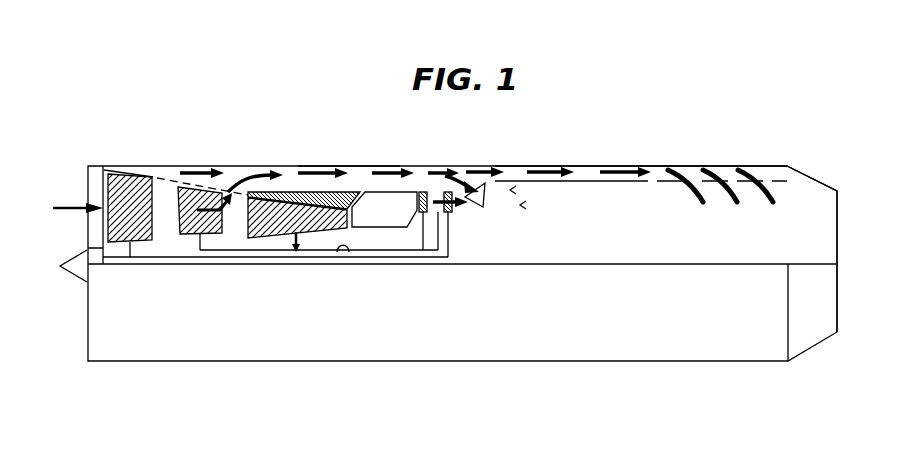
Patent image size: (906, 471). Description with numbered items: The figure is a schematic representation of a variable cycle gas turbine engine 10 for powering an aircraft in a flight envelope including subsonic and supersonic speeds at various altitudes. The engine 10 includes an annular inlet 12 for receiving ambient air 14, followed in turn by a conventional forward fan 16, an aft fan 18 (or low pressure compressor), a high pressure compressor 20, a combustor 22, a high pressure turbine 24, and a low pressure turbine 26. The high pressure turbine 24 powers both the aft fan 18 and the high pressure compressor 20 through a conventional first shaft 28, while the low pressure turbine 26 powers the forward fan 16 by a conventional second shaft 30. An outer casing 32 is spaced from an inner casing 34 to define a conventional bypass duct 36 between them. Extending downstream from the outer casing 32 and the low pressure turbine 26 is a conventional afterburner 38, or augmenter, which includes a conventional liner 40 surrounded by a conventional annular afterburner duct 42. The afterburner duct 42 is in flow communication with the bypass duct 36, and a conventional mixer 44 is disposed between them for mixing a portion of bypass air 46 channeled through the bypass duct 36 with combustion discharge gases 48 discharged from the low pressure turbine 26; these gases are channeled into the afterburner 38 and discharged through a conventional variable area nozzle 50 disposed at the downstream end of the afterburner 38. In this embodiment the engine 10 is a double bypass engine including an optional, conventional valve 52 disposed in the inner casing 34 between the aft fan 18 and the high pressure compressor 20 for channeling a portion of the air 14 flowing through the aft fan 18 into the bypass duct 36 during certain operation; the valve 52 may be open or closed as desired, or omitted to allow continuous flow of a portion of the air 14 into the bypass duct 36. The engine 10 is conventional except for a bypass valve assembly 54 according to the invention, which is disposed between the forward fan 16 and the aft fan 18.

The variable cycle gas turbine engine 10 is at (189, 372).
The annular inlet 12 is at (88, 178).
The ambient air 14 is at (62, 204).
The forward fan 16 is at (122, 186).
The aft fan 18 is at (183, 236).
The high pressure compressor 20 is at (275, 234).
The combustor 22 is at (396, 208).
The high pressure turbine 24 is at (428, 214).
The low pressure turbine 26 is at (451, 214).
The first shaft 28 is at (342, 254).
The second shaft 30 is at (314, 258).
The outer casing 32 is at (336, 167).
The inner casing 34 is at (344, 191).
The bypass duct 36 is at (300, 167).
The afterburner 38 is at (623, 160).
The liner 40 is at (583, 182).
The afterburner duct 42 is at (583, 167).
The mixer 44 is at (486, 204).
The bypass air 46 is at (389, 172).
The combustion discharge gases 48 is at (453, 212).
The variable area nozzle 50 is at (806, 170).
The valve 52 is at (233, 174).
The bypass valve assembly 54 is at (159, 160).